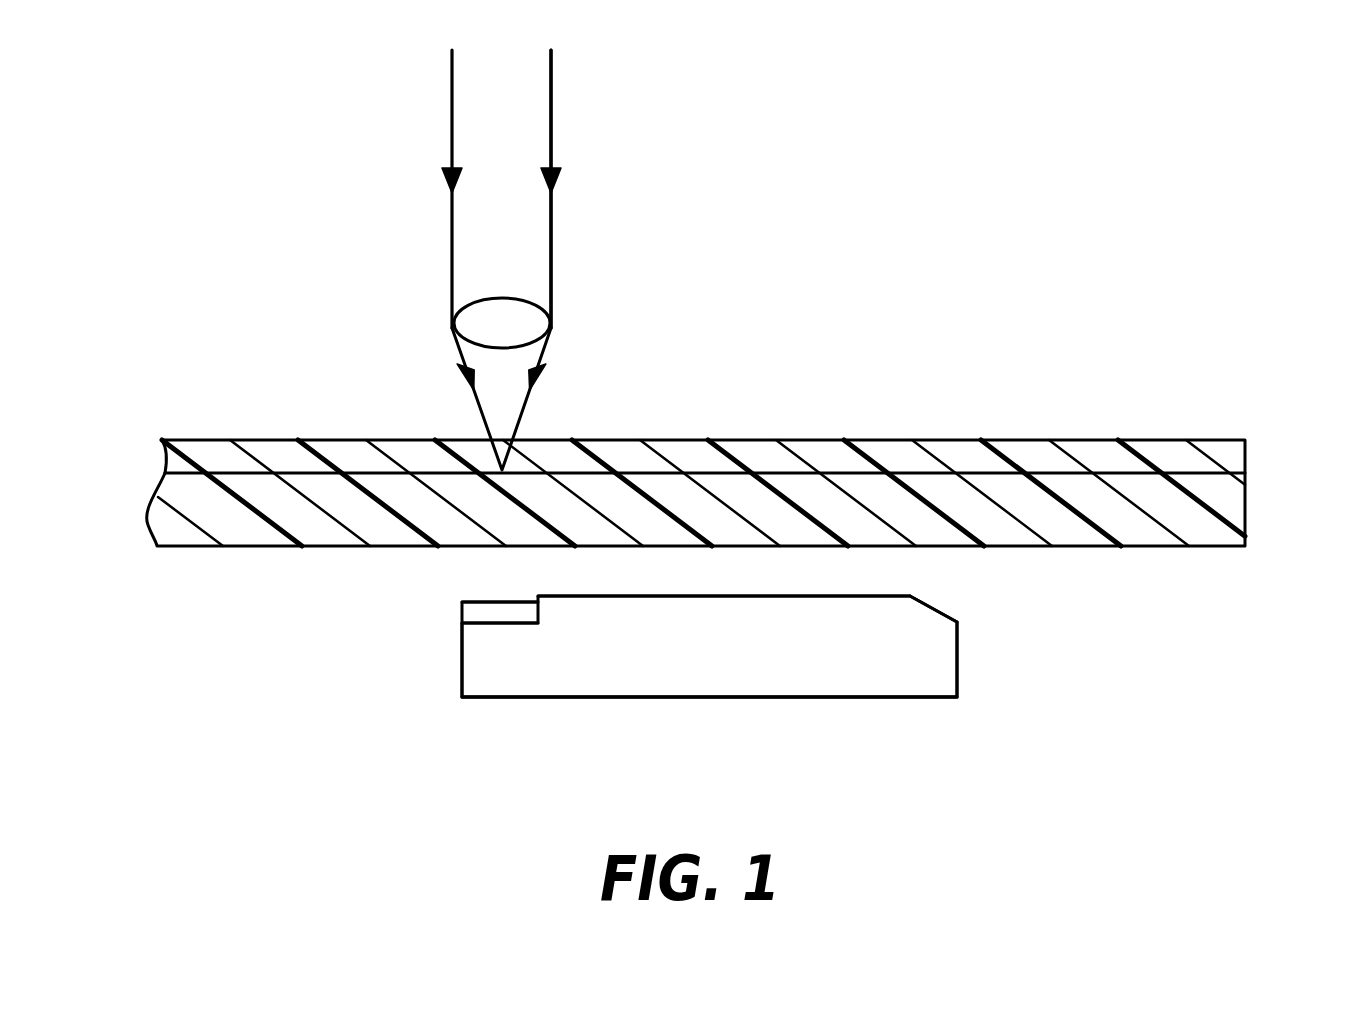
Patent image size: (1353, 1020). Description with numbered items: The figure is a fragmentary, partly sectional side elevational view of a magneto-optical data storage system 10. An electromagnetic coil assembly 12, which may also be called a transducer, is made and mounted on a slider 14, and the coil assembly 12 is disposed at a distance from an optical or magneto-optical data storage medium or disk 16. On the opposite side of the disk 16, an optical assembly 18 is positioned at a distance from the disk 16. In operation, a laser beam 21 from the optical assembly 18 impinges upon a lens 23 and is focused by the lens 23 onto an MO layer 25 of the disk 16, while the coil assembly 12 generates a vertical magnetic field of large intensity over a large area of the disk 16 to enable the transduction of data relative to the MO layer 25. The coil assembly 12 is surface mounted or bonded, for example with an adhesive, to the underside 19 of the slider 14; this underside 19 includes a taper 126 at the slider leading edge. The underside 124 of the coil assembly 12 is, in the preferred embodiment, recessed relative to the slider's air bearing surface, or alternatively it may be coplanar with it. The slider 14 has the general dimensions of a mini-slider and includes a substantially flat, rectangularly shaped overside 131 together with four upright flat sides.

The magneto-optical data storage system 10 is at (812, 210).
The electromagnetic coil assembly 12 is at (463, 615).
The slider 14 is at (933, 668).
The disk 16 is at (1228, 507).
The optical assembly 18 is at (363, 298).
The underside 19 is at (788, 595).
The laser beam 21 is at (550, 245).
The lens 23 is at (512, 333).
The MO layer 25 is at (1163, 470).
The underside 124 is at (512, 600).
The taper 126 is at (938, 610).
The overside 131 is at (792, 697).